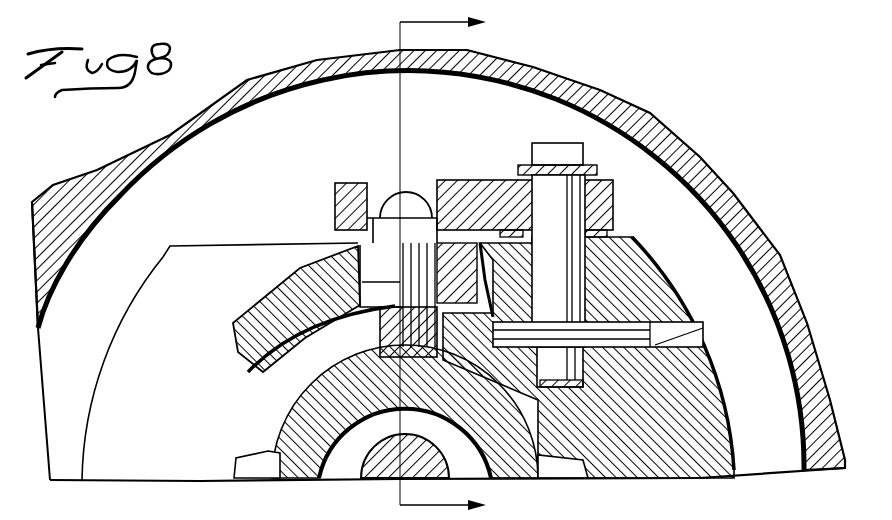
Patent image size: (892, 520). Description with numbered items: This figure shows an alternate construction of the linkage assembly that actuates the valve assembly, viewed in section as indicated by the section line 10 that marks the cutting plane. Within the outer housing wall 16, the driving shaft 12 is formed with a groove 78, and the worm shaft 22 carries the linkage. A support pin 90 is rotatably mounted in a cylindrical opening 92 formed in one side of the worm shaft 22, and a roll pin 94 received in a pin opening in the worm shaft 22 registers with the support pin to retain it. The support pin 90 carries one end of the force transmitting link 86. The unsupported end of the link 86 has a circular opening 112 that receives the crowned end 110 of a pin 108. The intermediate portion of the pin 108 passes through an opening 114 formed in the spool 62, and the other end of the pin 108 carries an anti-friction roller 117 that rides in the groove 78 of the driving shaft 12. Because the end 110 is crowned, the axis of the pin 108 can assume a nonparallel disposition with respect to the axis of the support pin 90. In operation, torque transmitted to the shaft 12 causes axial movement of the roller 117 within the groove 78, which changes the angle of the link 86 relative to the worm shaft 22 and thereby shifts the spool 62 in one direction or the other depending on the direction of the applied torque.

The section line 10 is at (461, 266).
The driving shaft 12 is at (307, 409).
The shell 16 is at (787, 283).
The worm shaft 22 is at (660, 287).
The spool 62 is at (240, 330).
The groove 78 is at (375, 357).
The force transmitting link 86 is at (480, 187).
The support pin 90 is at (572, 210).
The cylindrical opening 92 is at (582, 273).
The roll pin 94 is at (657, 343).
The pin 108 is at (370, 262).
The crowned end 110 is at (382, 183).
The circular opening 112 is at (423, 183).
The opening 114 is at (370, 282).
The anti-friction roller 117 is at (330, 372).